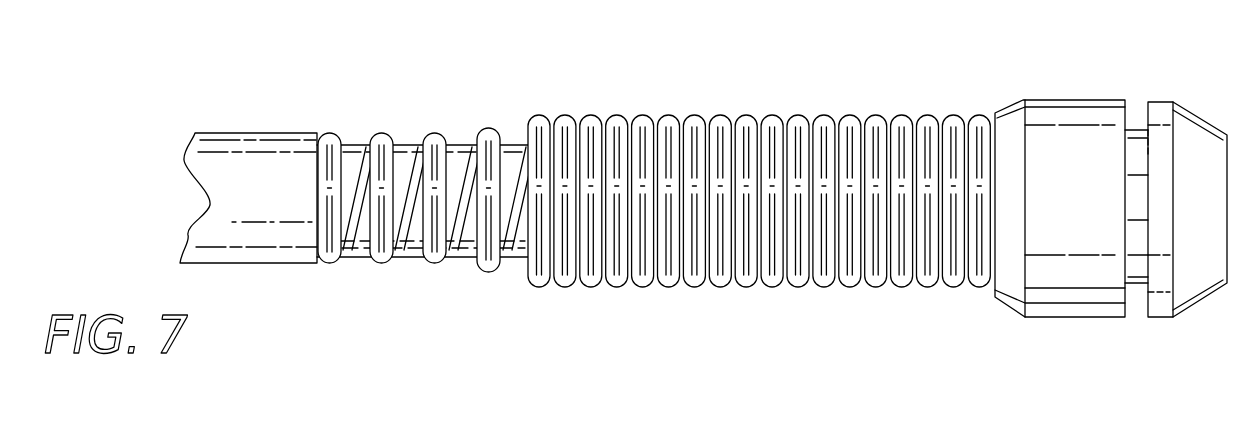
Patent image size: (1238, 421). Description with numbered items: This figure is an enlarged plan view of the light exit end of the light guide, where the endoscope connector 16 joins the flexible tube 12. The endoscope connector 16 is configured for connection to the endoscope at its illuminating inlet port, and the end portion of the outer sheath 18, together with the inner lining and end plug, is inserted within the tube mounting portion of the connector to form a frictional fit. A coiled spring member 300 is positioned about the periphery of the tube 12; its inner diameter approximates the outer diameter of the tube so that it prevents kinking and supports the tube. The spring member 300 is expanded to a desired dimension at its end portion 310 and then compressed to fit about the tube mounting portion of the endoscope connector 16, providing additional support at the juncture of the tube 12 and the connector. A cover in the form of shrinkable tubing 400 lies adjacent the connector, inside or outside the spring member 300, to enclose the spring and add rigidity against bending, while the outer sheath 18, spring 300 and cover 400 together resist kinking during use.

The tube 12 is at (567, 196).
The endoscope connector 16 is at (1098, 80).
The outer sheath 18 is at (458, 158).
The coiled spring member 300 is at (426, 211).
The spring end portion 310 is at (745, 118).
The shrinkable tubing cover 400 is at (265, 200).